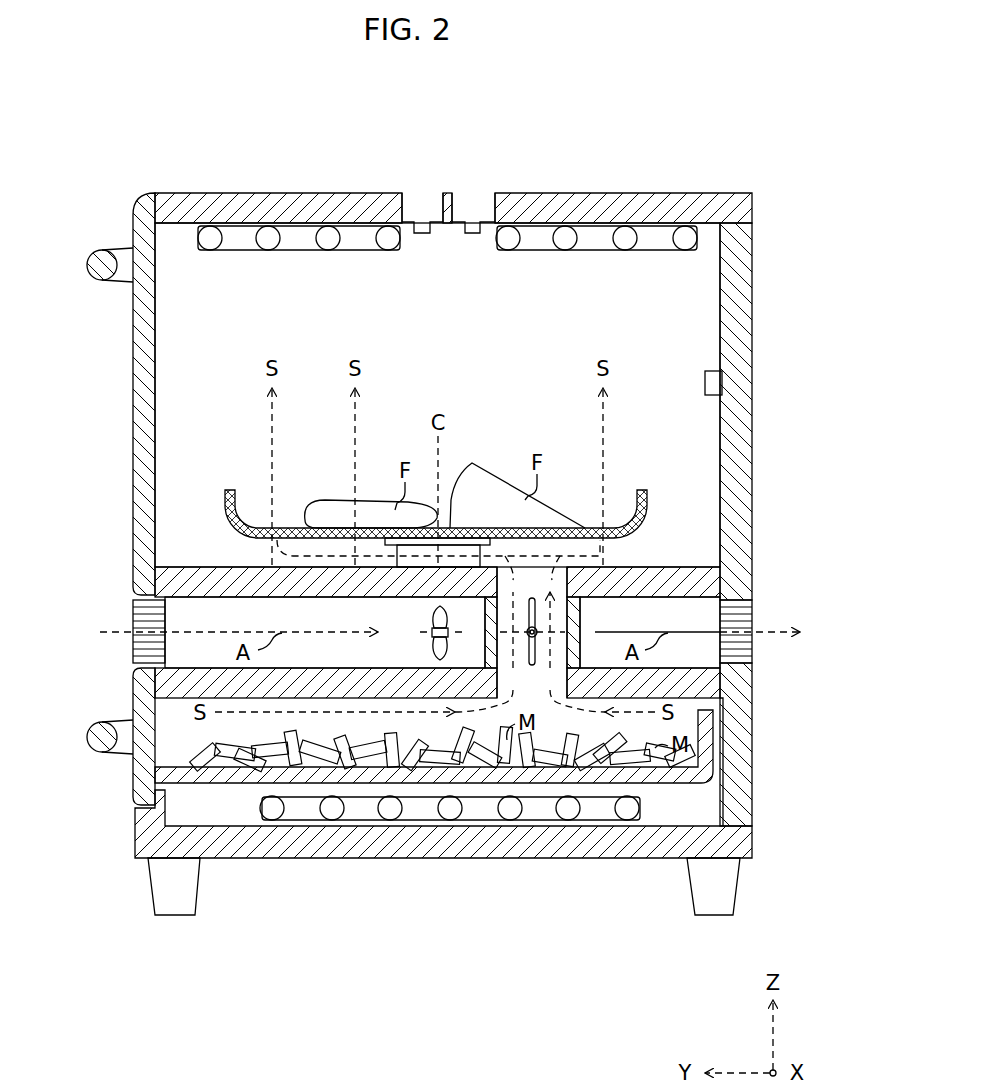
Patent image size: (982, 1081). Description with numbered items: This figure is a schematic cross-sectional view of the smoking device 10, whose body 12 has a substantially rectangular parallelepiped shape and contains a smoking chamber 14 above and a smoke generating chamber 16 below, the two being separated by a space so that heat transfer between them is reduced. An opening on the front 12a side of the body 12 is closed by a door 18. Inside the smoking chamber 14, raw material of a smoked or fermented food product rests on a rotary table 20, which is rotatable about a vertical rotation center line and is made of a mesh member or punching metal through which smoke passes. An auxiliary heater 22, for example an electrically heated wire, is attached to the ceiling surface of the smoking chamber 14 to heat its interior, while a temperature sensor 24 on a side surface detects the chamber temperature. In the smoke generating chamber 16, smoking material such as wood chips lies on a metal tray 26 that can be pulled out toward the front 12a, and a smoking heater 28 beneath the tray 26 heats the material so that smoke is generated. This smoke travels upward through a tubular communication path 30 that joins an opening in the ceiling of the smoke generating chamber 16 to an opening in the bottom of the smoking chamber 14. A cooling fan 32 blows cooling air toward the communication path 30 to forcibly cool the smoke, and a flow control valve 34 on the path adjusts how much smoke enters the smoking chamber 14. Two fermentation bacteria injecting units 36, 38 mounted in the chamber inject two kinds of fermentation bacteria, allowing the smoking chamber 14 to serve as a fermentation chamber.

The smoking device 10 is at (722, 180).
The body 12 is at (358, 192).
The front 12a is at (118, 461).
The smoking chamber 14 is at (193, 296).
The smoke generating chamber 16 is at (193, 816).
The door 18 is at (133, 228).
The rotary table 20 is at (229, 512).
The auxiliary heater 22 is at (295, 250).
The temperature sensor 24 is at (705, 380).
The tray 26 is at (176, 767).
The smoking heater 28 is at (412, 808).
The communication path 30 is at (580, 612).
The cooling fan 32 is at (432, 652).
The flow control valve 34 is at (535, 572).
The fermentation bacteria injecting unit 36 is at (421, 234).
The fermentation bacteria injecting unit 38 is at (472, 234).